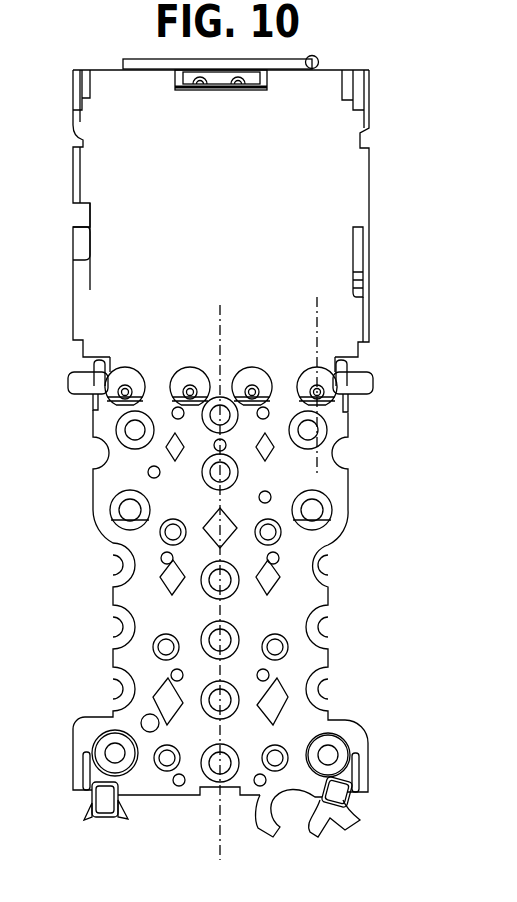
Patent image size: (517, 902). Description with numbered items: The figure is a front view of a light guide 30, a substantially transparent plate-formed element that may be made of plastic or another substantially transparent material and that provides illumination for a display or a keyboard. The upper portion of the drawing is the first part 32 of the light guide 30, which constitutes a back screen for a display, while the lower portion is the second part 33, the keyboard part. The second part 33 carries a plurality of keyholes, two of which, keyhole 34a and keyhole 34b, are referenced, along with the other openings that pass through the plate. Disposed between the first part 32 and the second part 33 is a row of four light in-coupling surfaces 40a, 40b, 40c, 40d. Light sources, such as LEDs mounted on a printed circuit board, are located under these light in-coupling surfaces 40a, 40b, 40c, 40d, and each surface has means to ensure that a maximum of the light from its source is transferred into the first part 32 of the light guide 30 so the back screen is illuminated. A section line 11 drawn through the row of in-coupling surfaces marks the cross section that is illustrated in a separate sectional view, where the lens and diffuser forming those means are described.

The light guide 30 is at (392, 362).
The first part 32 is at (285, 190).
The second part 33 is at (137, 487).
The keyhole 34a is at (315, 512).
The keyhole 34b is at (328, 757).
The light in-coupling surface 40a is at (318, 397).
The light in-coupling surface 40b is at (252, 392).
The light in-coupling surface 40c is at (190, 392).
The light in-coupling surface 40d is at (125, 392).
The section line 11 is at (317, 305).